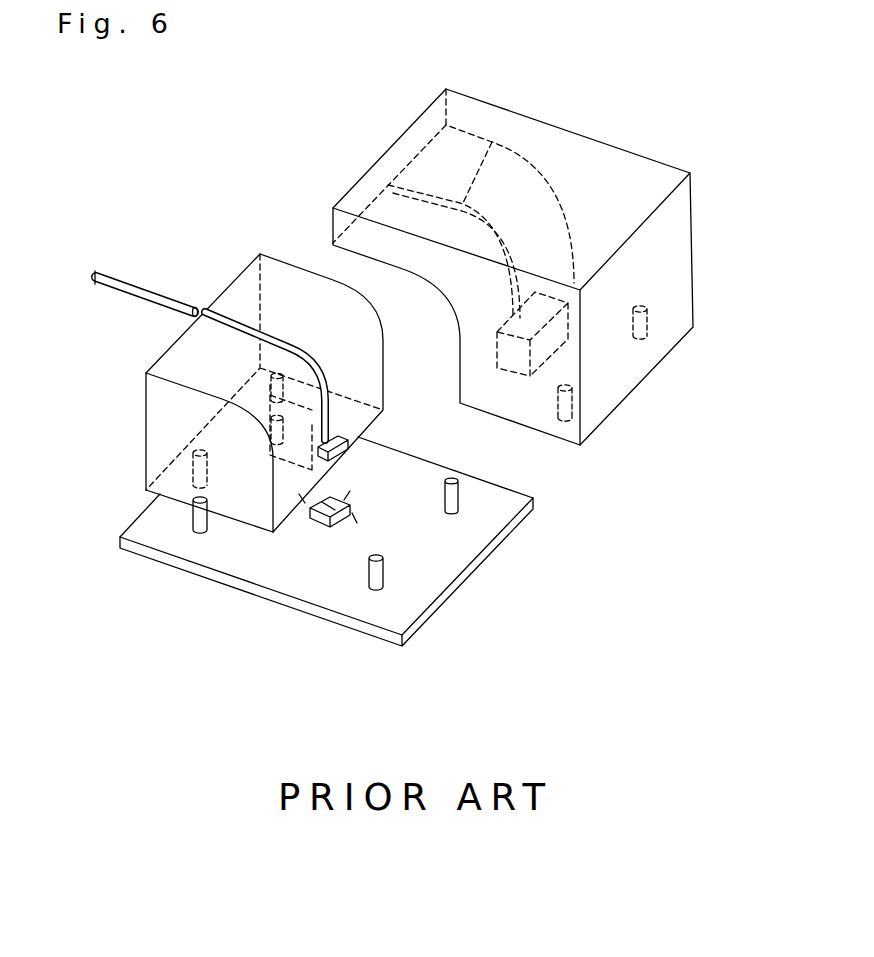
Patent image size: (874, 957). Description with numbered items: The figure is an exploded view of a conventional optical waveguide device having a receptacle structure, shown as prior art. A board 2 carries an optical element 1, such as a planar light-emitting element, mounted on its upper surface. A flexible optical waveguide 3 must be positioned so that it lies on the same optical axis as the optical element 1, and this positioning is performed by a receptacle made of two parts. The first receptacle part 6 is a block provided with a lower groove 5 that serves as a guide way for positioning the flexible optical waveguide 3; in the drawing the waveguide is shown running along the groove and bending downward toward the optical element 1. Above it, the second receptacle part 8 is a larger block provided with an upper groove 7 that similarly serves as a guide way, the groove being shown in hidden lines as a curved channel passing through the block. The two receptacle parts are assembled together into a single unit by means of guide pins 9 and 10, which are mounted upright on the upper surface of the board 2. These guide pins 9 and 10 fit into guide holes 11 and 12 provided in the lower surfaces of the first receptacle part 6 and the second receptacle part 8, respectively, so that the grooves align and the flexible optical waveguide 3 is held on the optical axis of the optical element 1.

The optical element 1 is at (312, 522).
The board 2 is at (440, 558).
The flexible optical waveguide 3 is at (146, 290).
The lower groove 5 is at (250, 330).
The first receptacle part 6 is at (162, 420).
The upper groove 7 is at (507, 124).
The second receptacle part 8 is at (640, 170).
The guide pin 9 is at (193, 520).
The guide pin 10 is at (368, 577).
The guide hole 11 is at (192, 468).
The guide hole 12 is at (650, 314).